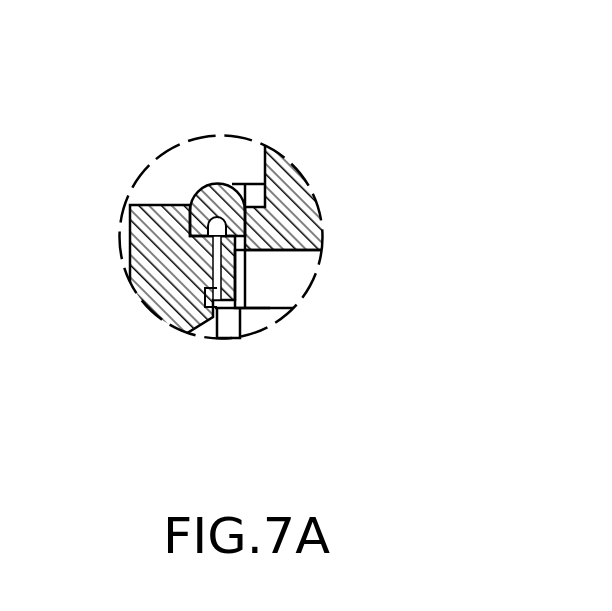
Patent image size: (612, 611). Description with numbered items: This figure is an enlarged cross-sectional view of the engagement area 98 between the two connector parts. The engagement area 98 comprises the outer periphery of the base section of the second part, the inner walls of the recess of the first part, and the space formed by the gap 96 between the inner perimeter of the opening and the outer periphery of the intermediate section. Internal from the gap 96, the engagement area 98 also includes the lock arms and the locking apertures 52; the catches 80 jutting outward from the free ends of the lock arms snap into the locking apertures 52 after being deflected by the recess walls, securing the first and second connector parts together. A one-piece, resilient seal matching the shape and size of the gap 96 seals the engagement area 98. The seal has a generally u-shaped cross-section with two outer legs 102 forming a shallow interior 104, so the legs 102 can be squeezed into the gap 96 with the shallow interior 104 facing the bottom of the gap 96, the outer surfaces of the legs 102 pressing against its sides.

The engagement area 98 is at (239, 138).
The outer legs 102 is at (200, 216).
The shallow interior 104 is at (245, 263).
The gap 96 is at (175, 319).
The locking apertures 52 is at (212, 310).
The catches 80 is at (217, 311).